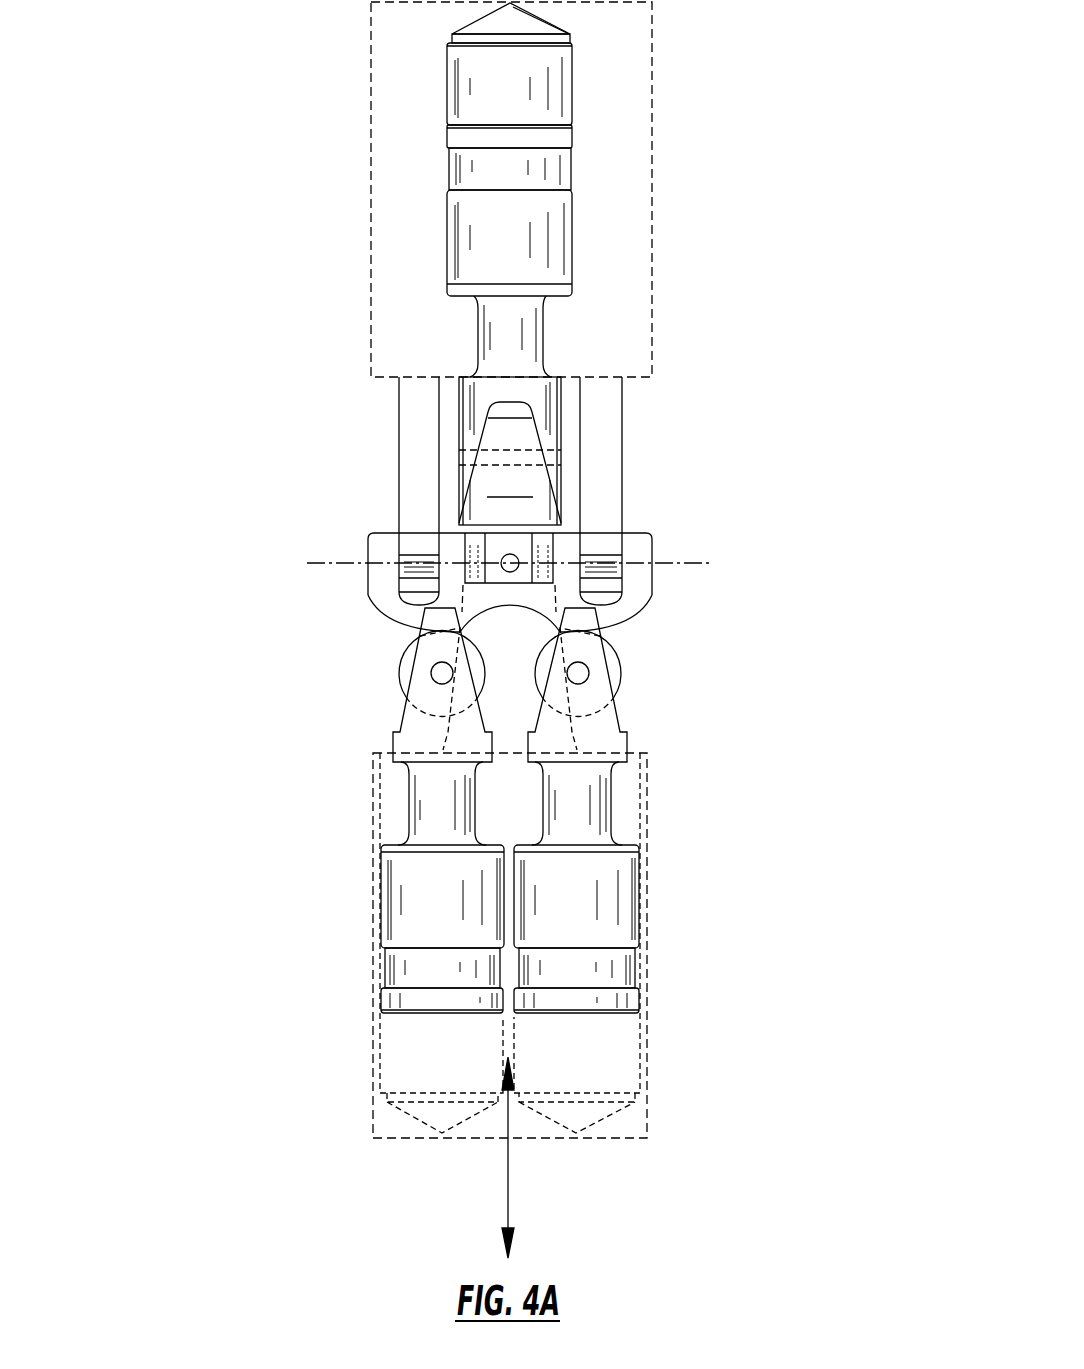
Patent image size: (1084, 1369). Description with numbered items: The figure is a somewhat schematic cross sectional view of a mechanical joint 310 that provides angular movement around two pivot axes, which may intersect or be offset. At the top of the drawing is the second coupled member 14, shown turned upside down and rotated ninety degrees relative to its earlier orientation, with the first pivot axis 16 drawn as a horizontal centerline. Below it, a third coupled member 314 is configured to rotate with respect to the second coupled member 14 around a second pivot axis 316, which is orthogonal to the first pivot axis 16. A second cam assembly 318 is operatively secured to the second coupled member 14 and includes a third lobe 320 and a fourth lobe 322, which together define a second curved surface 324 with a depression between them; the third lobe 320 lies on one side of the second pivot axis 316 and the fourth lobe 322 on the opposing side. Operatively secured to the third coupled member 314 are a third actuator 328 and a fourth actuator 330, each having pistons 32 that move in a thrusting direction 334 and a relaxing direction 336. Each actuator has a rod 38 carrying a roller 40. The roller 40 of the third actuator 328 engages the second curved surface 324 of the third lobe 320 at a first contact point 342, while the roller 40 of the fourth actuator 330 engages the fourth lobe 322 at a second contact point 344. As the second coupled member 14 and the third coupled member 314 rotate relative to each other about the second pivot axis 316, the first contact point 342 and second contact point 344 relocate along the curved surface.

The second coupled member 14 is at (370, 98).
The first pivot axis 16 is at (333, 560).
The pistons 32 is at (470, 988).
The rod 38 is at (557, 802).
The roller 40 is at (485, 687).
The mechanical joint 310 is at (718, 218).
The third coupled member 314 is at (372, 905).
The second pivot axis 316 is at (507, 553).
The second cam assembly 318 is at (375, 547).
The third lobe 320 is at (387, 617).
The fourth lobe 322 is at (655, 600).
The second curved surface 324 is at (630, 615).
The third actuator 328 is at (370, 982).
The fourth actuator 330 is at (652, 1005).
The thrusting direction 334 is at (507, 1125).
The relaxing direction 336 is at (508, 1183).
The first contact point 342 is at (435, 632).
The second contact point 344 is at (585, 632).